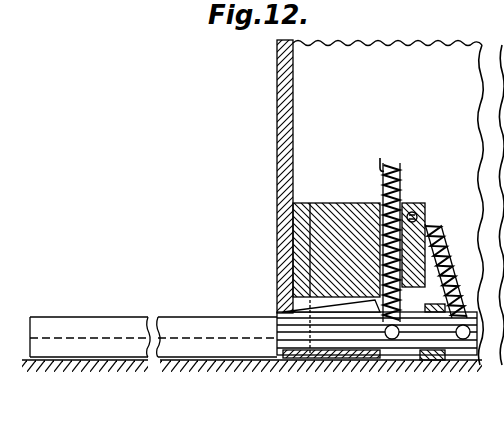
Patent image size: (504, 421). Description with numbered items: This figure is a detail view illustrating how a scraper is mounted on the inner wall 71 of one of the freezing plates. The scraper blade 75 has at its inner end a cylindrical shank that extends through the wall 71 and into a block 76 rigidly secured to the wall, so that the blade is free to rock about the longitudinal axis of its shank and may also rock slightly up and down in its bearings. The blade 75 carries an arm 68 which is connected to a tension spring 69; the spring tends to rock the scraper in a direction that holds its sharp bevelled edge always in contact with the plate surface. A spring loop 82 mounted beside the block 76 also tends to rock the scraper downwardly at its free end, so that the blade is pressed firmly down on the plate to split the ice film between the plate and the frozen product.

The inner wall 71 is at (284, 105).
The scraper blade 75 is at (114, 326).
The block 76 is at (340, 208).
The spring loop 82 is at (402, 183).
The tension spring 69 is at (440, 256).
The arm 68 is at (462, 342).